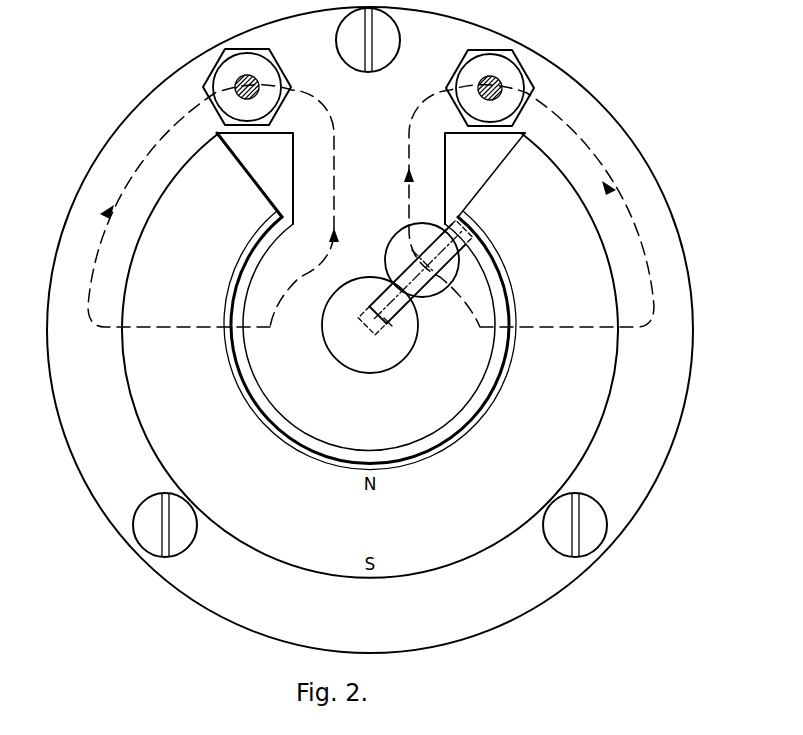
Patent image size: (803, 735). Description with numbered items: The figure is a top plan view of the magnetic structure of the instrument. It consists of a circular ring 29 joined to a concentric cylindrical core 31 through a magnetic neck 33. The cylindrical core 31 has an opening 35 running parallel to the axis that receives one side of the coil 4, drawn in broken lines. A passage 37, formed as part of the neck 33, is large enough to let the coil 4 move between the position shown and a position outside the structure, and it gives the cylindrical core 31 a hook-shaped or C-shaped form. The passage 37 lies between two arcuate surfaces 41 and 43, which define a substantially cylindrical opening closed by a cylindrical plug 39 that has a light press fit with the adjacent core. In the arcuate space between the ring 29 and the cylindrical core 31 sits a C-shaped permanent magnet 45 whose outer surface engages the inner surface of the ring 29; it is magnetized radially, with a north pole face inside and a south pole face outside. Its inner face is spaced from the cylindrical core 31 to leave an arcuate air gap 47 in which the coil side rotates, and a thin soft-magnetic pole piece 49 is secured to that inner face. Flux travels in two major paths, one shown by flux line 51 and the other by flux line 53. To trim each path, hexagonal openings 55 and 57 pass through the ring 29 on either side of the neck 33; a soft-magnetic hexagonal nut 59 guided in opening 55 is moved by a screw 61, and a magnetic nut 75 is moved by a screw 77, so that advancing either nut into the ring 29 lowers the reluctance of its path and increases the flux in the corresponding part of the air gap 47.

The coil 4 is at (396, 327).
The circular ring 29 is at (685, 352).
The cylindrical core 31 is at (345, 373).
The neck 33 is at (297, 150).
The opening 35 is at (324, 338).
The passage 37 is at (384, 291).
The plug 39 is at (446, 223).
The arcuate surface 41 is at (392, 238).
The arcuate surface 43 is at (440, 278).
The C-shaped permanent magnet 45 is at (584, 418).
The arcuate air gap 47 is at (283, 225).
The pole piece 49 is at (229, 289).
The flux line 51 is at (88, 236).
The flux line 53 is at (652, 242).
The opening 55 is at (226, 48).
The opening 57 is at (508, 49).
The hexagonal nut 59 is at (247, 58).
The screw 61 is at (261, 80).
The magnetic nut 75 is at (486, 58).
The screw 77 is at (478, 82).